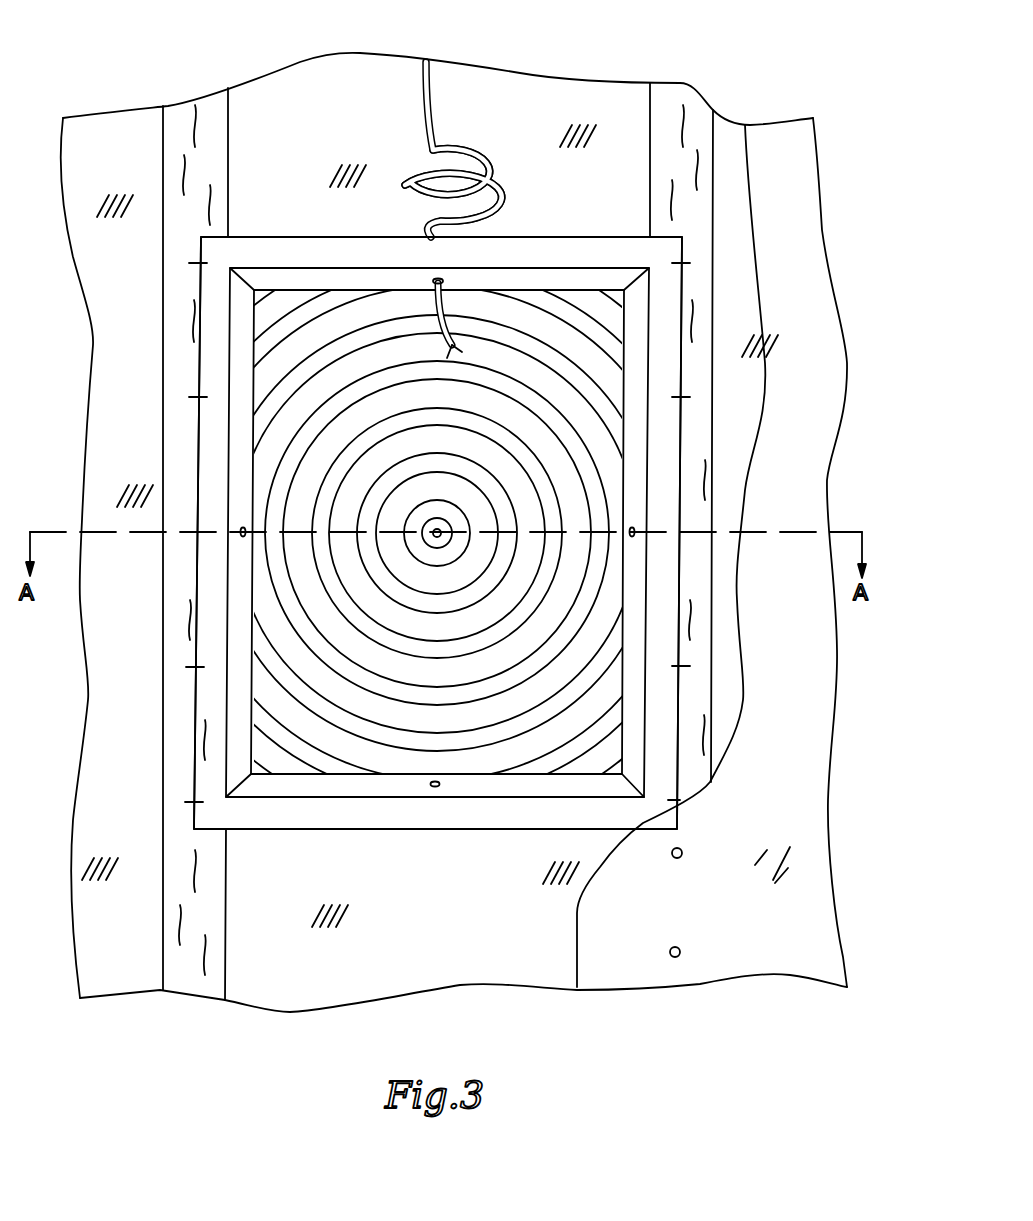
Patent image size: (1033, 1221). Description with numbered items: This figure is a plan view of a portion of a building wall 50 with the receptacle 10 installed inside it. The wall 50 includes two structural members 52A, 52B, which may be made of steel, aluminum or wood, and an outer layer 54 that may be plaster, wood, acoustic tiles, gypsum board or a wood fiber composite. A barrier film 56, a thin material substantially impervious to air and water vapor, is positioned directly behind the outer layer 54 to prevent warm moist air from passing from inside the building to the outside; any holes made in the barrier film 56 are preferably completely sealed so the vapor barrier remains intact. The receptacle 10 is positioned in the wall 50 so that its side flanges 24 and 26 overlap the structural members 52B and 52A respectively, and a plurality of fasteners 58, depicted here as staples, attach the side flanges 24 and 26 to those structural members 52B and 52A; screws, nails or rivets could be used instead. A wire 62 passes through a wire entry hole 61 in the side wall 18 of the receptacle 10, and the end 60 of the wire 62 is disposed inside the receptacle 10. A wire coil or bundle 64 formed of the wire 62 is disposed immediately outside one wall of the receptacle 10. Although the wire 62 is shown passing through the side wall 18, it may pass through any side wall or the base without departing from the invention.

The receptacle 10 is at (458, 549).
The side wall 18 is at (600, 275).
The side flange 24 is at (668, 707).
The side flange 26 is at (210, 725).
The building wall 50 is at (548, 1028).
The structural member 52A is at (193, 125).
The structural member 52B is at (702, 127).
The outer layer 54 is at (805, 300).
The barrier film 56 is at (730, 203).
The fasteners 58 is at (195, 667).
The end of wire 60 is at (443, 330).
The wire entry hole 61 is at (445, 273).
The wire 62 is at (423, 92).
The wire coil or bundle 64 is at (397, 203).